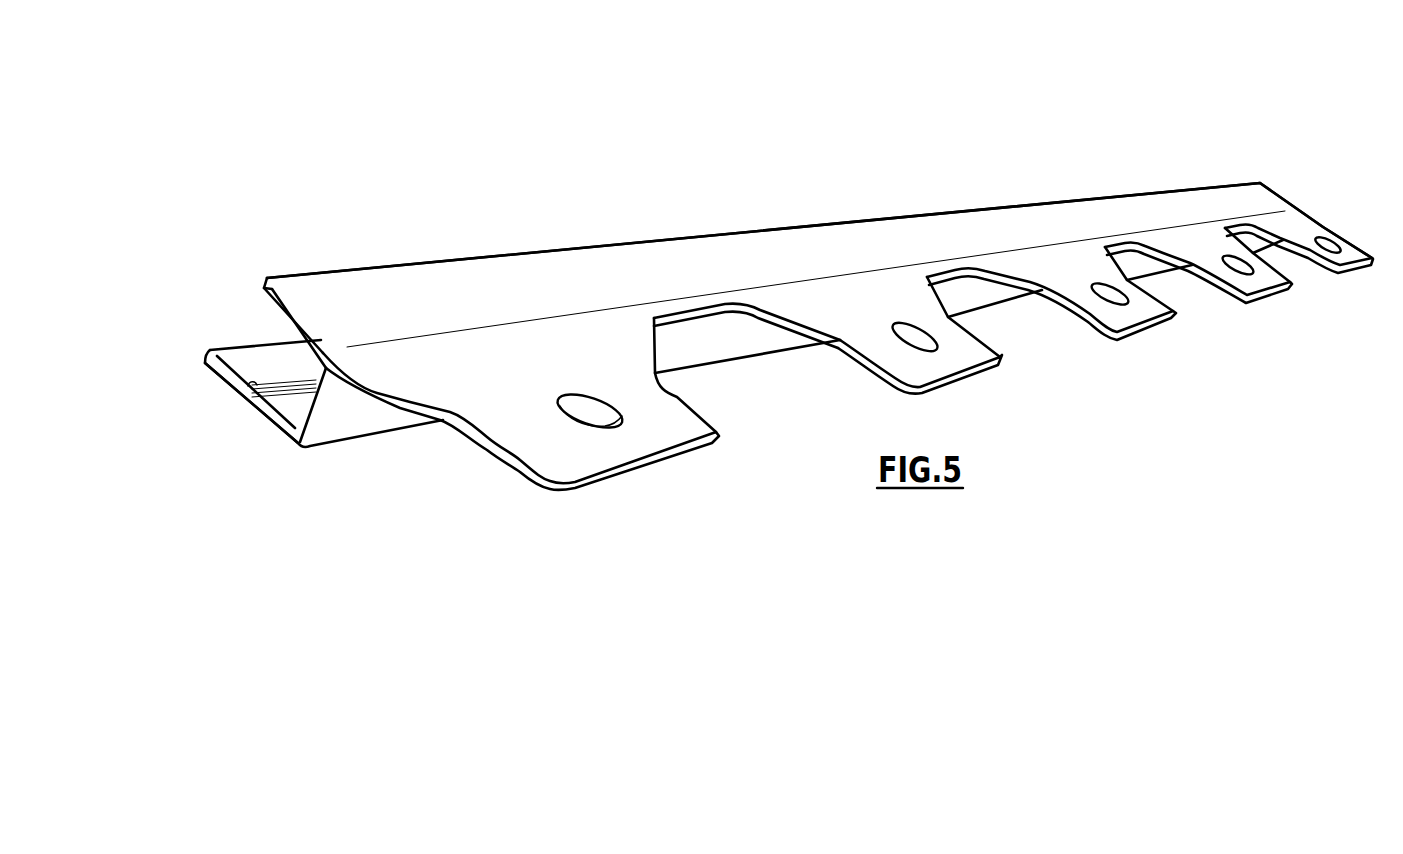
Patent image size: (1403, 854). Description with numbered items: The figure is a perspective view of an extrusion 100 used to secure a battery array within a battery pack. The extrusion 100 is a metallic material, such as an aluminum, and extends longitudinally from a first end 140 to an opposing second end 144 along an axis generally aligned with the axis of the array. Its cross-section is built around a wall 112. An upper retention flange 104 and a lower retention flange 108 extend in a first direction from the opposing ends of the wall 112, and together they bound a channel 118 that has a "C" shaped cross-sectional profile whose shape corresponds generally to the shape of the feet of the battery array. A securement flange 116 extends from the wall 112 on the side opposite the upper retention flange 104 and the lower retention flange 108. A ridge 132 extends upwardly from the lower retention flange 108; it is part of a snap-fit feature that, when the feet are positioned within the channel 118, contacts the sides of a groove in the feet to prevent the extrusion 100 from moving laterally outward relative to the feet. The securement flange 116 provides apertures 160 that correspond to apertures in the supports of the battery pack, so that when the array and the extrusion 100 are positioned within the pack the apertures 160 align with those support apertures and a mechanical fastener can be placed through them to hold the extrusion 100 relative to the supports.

The extrusion 100 is at (1172, 108).
The upper retention flange 104 is at (482, 287).
The lower retention flange 108 is at (250, 373).
The wall 112 is at (730, 340).
The securement flange 116 is at (633, 393).
The channel 118 is at (245, 313).
The ridge 132 is at (282, 386).
The first end 140 is at (190, 400).
The second end 144 is at (1307, 203).
The apertures 160 is at (582, 405).